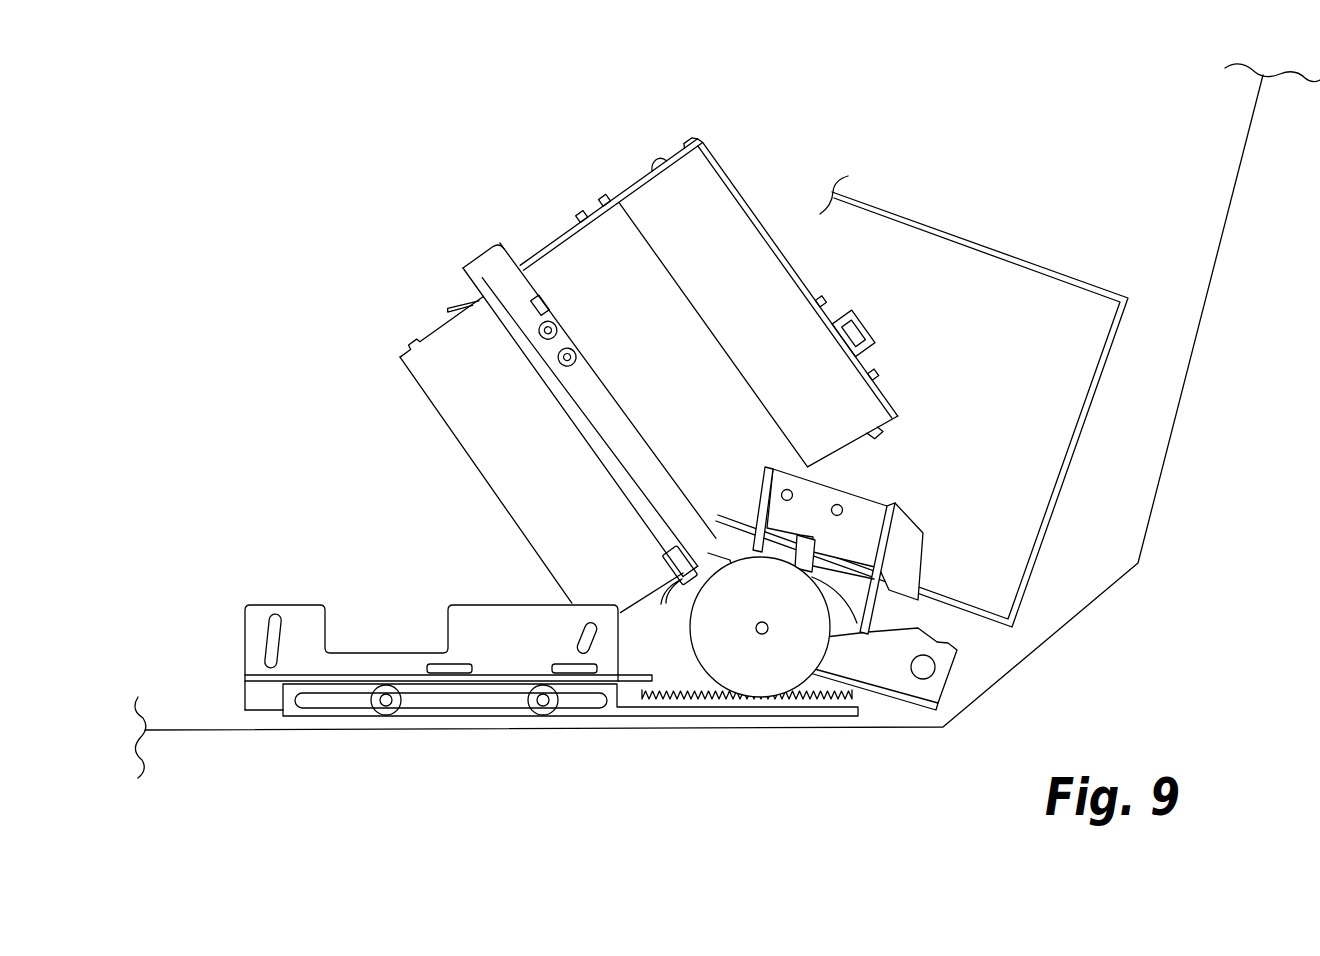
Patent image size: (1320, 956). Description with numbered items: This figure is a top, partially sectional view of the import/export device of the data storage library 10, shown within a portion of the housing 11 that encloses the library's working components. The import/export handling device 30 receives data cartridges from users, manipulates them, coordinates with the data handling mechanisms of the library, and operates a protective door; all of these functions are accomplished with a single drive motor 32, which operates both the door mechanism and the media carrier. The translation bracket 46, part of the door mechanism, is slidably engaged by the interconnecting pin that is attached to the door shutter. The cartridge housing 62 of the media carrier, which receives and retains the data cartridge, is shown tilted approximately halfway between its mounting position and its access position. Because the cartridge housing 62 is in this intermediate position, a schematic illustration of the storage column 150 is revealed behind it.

The data storage library 10 is at (551, 734).
The housing 11 is at (1077, 617).
The import/export handling device 30 is at (651, 349).
The drive motor 32 is at (926, 533).
The translation bracket 46 is at (629, 698).
The cartridge housing 62 is at (608, 200).
The storage column 150 is at (1005, 253).